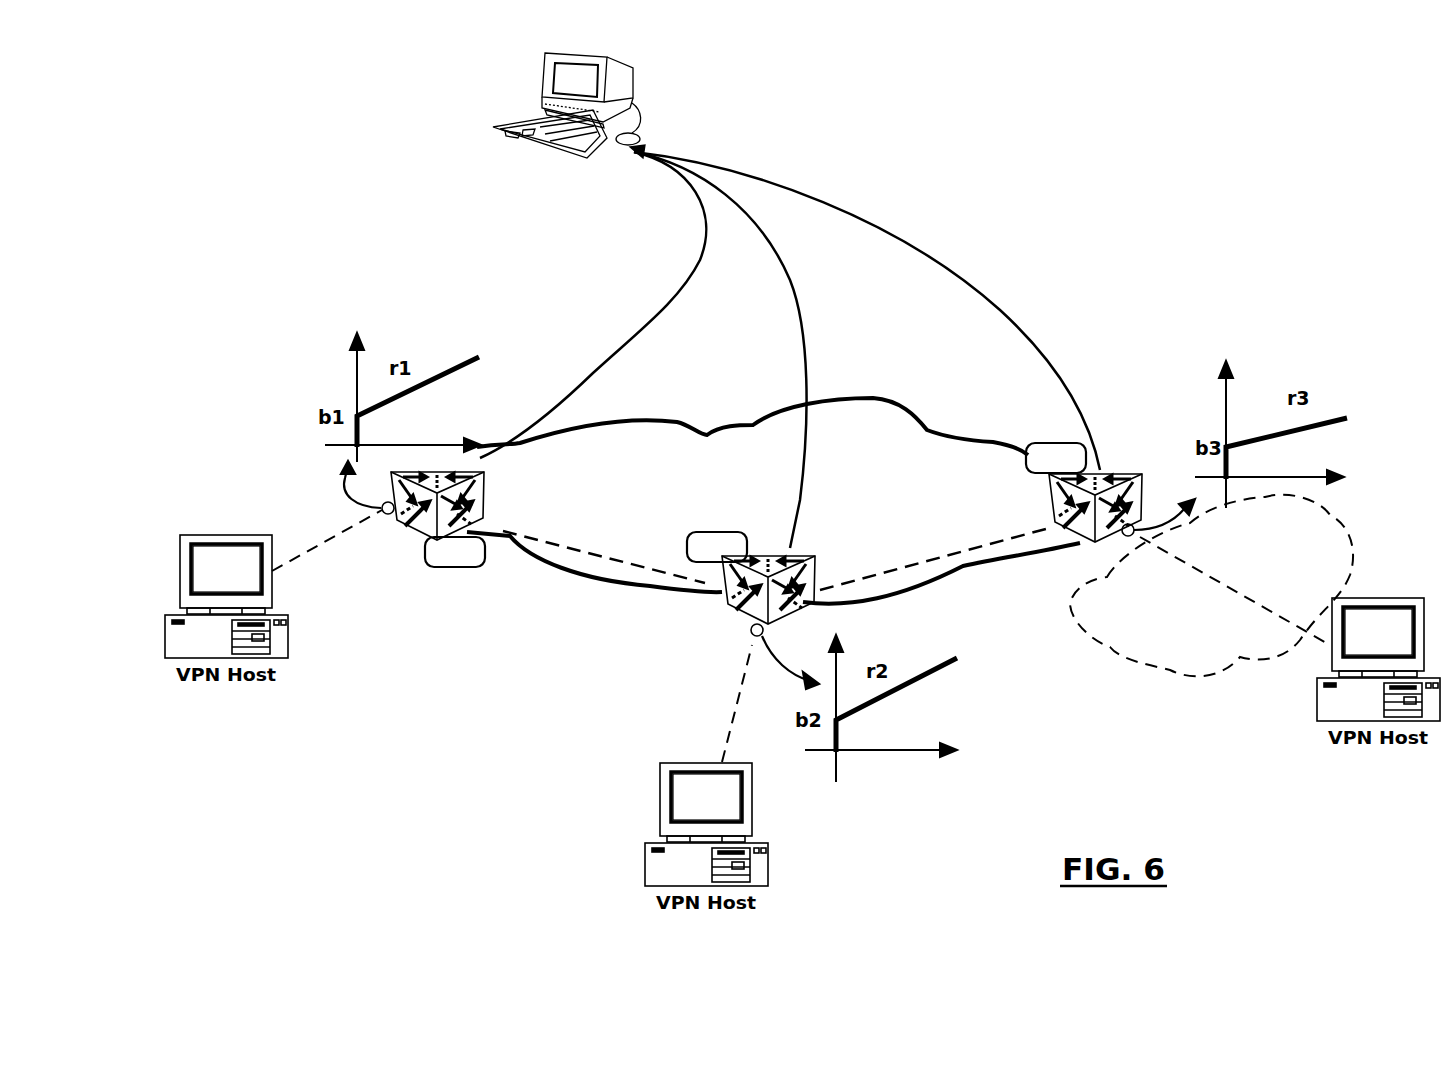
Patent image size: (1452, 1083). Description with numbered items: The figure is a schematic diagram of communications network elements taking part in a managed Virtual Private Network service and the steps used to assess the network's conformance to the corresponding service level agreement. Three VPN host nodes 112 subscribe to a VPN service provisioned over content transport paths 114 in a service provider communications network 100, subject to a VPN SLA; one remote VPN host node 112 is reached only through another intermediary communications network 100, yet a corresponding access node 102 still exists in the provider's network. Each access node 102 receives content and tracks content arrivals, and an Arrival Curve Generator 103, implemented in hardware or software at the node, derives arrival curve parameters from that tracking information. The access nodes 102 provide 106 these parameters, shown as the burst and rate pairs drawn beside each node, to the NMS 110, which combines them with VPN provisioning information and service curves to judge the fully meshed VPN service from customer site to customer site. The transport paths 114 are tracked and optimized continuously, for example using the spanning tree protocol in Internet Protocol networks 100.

The communications network 100 is at (972, 406).
The communications network node 102 is at (412, 528).
The Arrival Curve Generator 103 is at (485, 563).
The provision of arrival curve parameters 106 is at (648, 312).
The NMS 110 is at (625, 87).
The VPN host node 112 is at (190, 582).
The content transport path 114 is at (653, 574).